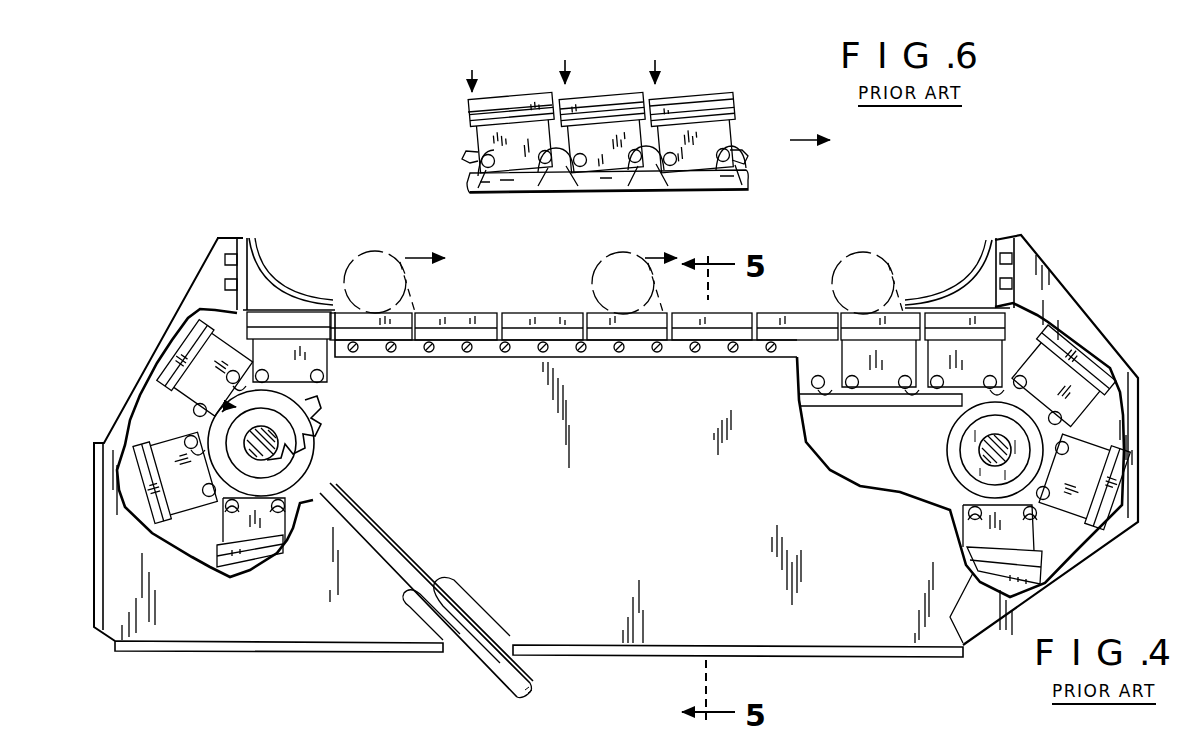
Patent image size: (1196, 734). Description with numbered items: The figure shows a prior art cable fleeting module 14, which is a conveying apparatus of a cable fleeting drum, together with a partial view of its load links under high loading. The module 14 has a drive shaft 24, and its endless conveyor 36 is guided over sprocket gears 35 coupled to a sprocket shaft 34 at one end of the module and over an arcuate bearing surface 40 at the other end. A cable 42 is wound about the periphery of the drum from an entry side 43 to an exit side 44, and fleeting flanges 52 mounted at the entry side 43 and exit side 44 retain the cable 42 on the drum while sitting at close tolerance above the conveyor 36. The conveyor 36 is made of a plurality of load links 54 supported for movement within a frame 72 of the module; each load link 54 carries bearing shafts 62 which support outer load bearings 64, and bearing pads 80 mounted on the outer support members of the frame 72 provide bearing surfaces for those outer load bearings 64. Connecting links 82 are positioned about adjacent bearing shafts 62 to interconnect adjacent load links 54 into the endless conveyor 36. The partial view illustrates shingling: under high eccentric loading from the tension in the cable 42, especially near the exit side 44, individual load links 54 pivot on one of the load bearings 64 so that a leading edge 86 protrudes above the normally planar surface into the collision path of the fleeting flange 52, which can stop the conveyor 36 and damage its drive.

In FIG. 4, the cable fleeting module 14 is at (152, 308).
In FIG. 4, the drive shaft 24 is at (477, 652).
In FIG. 4, the sprocket shaft 34 is at (276, 446).
In FIG. 4, the sprocket gear 35 is at (322, 424).
In FIG. 4, the endless conveyor 36 is at (770, 304).
In FIG. 4, the arcuate bearing surface 40 is at (952, 456).
In FIG. 4, the cable 42 is at (366, 256).
In FIG. 4, the entry side 43 is at (304, 282).
In FIG. 4, the exit side 44 is at (930, 292).
In FIG. 4, the fleeting flange 52 is at (246, 240).
In FIG. 6, the load link 54 is at (516, 92).
In FIG. 4, the load link 54 is at (511, 310).
In FIG. 6, the bearing shaft 62 is at (482, 153).
In FIG. 4, the bearing shaft 62 is at (228, 508).
In FIG. 6, the outer load bearing 64 is at (490, 174).
In FIG. 4, the outer load bearing 64 is at (190, 432).
In FIG. 4, the frame 72 is at (852, 660).
In FIG. 6, the bearing pad 80 is at (740, 194).
In FIG. 4, the bearing pad 80 is at (900, 404).
In FIG. 6, the connecting link 82 is at (555, 172).
In FIG. 4, the connecting link 82 is at (292, 520).
In FIG. 6, the leading edge 86 is at (553, 93).